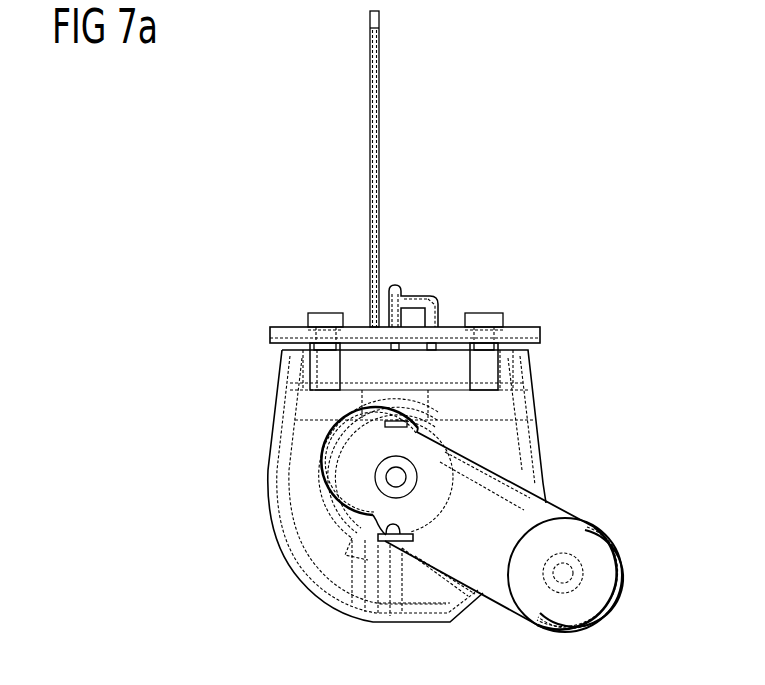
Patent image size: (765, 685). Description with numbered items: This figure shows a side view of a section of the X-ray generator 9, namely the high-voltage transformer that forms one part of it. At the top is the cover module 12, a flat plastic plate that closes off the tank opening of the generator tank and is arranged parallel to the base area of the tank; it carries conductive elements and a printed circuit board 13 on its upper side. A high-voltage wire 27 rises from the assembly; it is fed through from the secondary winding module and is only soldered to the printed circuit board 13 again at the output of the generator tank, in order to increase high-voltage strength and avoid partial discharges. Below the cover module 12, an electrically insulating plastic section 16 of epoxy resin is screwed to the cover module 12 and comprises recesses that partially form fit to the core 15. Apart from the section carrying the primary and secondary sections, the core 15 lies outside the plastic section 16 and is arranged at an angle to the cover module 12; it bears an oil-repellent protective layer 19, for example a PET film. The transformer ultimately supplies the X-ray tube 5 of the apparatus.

The X-ray generator 9 is at (547, 284).
The high-voltage wire 27 is at (381, 97).
The printed circuit board 13 is at (393, 287).
The cover module 12 is at (449, 326).
The plastic section 16 is at (333, 562).
The X-ray tube 5 is at (347, 457).
The core 15 is at (533, 520).
The protective layer 19 is at (620, 547).